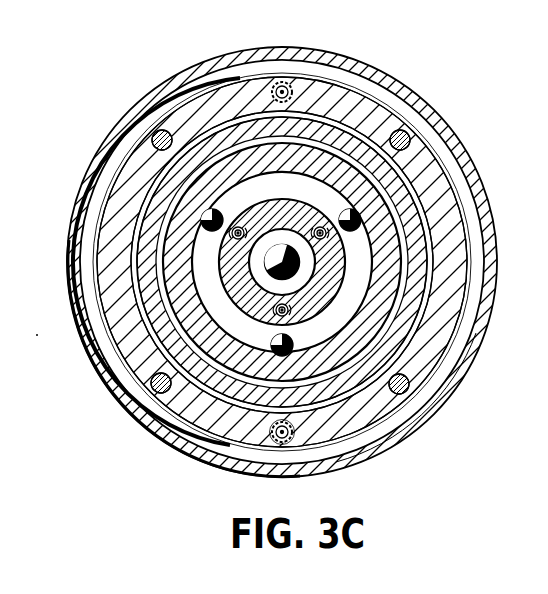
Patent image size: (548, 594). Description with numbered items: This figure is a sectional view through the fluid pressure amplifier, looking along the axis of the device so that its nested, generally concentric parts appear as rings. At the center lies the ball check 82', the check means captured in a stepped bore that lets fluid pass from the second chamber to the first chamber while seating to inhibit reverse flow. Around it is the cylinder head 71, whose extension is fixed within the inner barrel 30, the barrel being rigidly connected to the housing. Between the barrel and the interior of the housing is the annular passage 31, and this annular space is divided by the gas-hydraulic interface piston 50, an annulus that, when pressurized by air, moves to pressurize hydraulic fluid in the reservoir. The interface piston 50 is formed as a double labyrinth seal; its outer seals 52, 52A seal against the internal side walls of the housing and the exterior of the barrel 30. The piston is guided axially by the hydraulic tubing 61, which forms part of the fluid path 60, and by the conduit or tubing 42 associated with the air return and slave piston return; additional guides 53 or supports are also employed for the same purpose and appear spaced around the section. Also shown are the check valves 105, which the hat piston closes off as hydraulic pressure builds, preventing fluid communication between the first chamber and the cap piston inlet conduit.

The inner barrel 30 is at (395, 192).
The annular passage 31 is at (378, 90).
The conduit or tubing 42 is at (272, 86).
The gas-hydraulic interface piston 50 is at (448, 308).
The outer seal 52 is at (448, 358).
The outer seal 52A is at (416, 323).
The additional guides 53 is at (157, 132).
The fluid path 60 is at (285, 443).
The hydraulic tubing 61 is at (270, 440).
The cylinder head 71 is at (388, 243).
The ball check 82' is at (164, 261).
The check valves 105 is at (360, 216).